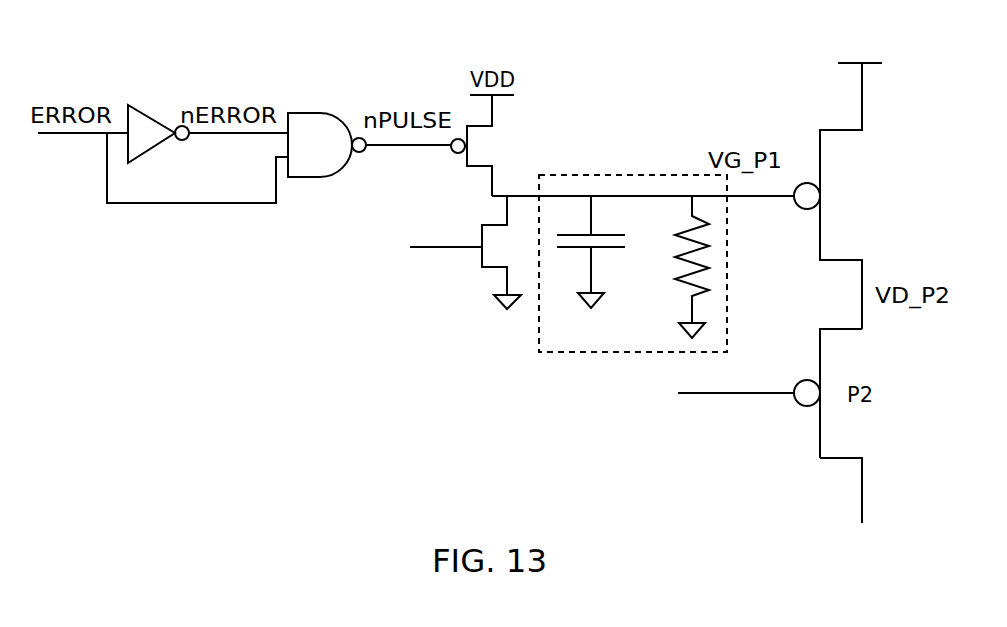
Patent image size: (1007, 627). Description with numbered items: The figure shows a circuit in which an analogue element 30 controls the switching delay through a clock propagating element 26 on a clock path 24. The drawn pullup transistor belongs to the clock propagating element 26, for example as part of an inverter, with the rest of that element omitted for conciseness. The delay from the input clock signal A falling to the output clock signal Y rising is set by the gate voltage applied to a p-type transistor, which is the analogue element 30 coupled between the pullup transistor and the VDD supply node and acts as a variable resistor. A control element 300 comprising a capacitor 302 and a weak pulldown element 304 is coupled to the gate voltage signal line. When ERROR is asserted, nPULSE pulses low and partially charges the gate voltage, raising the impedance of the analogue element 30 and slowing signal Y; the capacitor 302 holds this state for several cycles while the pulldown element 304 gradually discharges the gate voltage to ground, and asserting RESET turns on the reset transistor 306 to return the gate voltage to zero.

The analogue element 30 is at (820, 147).
The capacitor 302 is at (591, 217).
The weak pulldown element 304 is at (692, 207).
The reset transistor 306 is at (490, 268).
The control element 300 is at (577, 352).
The clock path 24 is at (747, 394).
The clock propagating element 26 is at (842, 460).